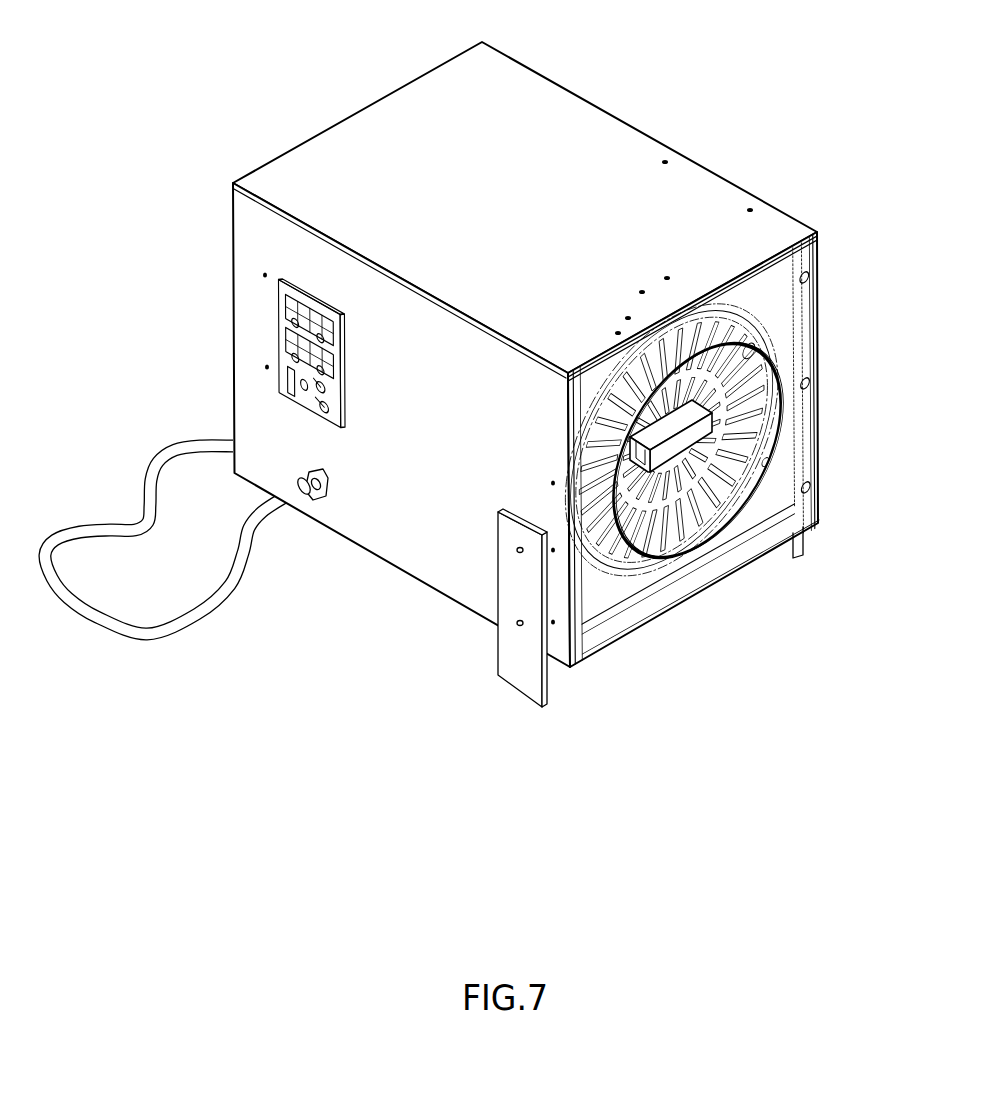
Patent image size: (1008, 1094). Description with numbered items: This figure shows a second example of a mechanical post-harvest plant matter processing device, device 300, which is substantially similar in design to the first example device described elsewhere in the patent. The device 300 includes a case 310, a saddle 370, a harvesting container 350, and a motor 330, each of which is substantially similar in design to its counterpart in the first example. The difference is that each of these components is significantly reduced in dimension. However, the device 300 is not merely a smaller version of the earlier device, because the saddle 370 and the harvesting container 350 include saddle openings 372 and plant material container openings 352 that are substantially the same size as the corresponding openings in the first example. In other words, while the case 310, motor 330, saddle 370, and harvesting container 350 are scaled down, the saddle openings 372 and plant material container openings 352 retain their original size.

The device 300 is at (346, 68).
The case 310 is at (522, 63).
The motor 330 is at (598, 363).
The harvesting container 350 is at (618, 500).
The plant material container openings 352 is at (665, 503).
The saddle 370 is at (758, 292).
The saddle openings 372 is at (615, 475).